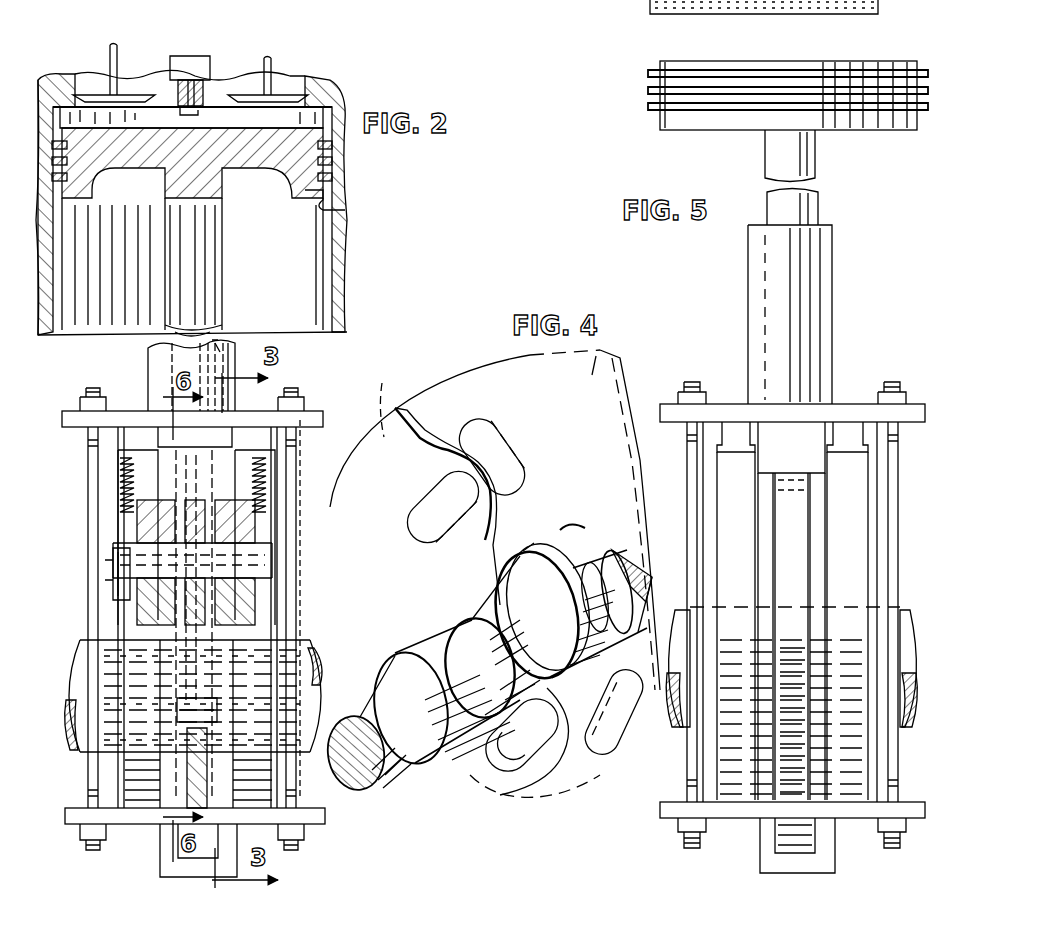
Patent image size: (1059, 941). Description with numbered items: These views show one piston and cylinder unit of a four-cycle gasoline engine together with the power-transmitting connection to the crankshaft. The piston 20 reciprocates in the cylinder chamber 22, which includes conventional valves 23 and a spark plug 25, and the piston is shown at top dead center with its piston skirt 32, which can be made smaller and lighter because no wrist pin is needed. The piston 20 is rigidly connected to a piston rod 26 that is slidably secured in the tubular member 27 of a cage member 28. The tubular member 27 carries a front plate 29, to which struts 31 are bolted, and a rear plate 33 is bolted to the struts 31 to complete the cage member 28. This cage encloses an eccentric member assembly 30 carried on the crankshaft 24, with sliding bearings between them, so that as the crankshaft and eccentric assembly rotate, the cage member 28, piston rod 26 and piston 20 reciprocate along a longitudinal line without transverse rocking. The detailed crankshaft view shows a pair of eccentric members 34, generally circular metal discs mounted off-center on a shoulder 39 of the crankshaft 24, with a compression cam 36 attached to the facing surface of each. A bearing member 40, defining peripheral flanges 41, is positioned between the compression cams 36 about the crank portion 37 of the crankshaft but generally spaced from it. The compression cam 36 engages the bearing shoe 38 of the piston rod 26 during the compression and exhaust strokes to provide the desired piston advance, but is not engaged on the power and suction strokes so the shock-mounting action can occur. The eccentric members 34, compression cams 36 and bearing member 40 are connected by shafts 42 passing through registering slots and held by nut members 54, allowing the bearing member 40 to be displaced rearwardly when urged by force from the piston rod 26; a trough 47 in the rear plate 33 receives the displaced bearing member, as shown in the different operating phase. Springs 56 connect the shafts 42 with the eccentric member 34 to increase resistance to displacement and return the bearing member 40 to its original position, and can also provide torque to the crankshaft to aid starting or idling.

In FIG. 2, the piston 20 is at (320, 150).
In FIG. 5, the piston 20 is at (680, 66).
In FIG. 2, the cylinder chamber 22 is at (345, 272).
In FIG. 2, the valves 23 is at (125, 98).
In FIG. 2, the crankshaft 24 is at (318, 648).
In FIG. 4, the crankshaft 24 is at (410, 778).
In FIG. 5, the crankshaft 24 is at (917, 630).
In FIG. 2, the spark plug 25 is at (200, 78).
In FIG. 2, the piston rod 26 is at (213, 262).
In FIG. 5, the piston rod 26 is at (812, 162).
In FIG. 2, the tubular member 27 is at (148, 380).
In FIG. 2, the cage member 28 is at (305, 440).
In FIG. 2, the front plate 29 is at (72, 411).
In FIG. 2, the eccentric member assembly 30 is at (278, 490).
In FIG. 5, the eccentric member assembly 30 is at (792, 615).
In FIG. 2, the struts 31 is at (90, 588).
In FIG. 2, the piston skirt 32 is at (347, 210).
In FIG. 5, the piston skirt 32 is at (790, 314).
In FIG. 2, the rear plate 33 is at (325, 816).
In FIG. 5, the rear plate 33 is at (927, 813).
In FIG. 2, the eccentric member 34 is at (112, 632).
In FIG. 4, the eccentric member 34 is at (388, 402).
In FIG. 5, the eccentric member 34 is at (858, 583).
In FIG. 2, the compression cam 36 is at (225, 688).
In FIG. 5, the compression cam 36 is at (818, 548).
In FIG. 4, the crank portion 37 is at (470, 582).
In FIG. 2, the bearing shoe 38 is at (160, 440).
In FIG. 5, the bearing shoe 38 is at (807, 458).
In FIG. 4, the shoulder 39 is at (548, 565).
In FIG. 2, the bearing member 40 is at (195, 683).
In FIG. 4, the bearing member 40 is at (612, 358).
In FIG. 5, the bearing member 40 is at (805, 507).
In FIG. 2, the peripheral flanges 41 is at (170, 812).
In FIG. 2, the shaft 42 is at (245, 557).
In FIG. 5, the trough 47 is at (820, 858).
In FIG. 2, the nut members 54 is at (115, 545).
In FIG. 2, the springs 56 is at (125, 522).